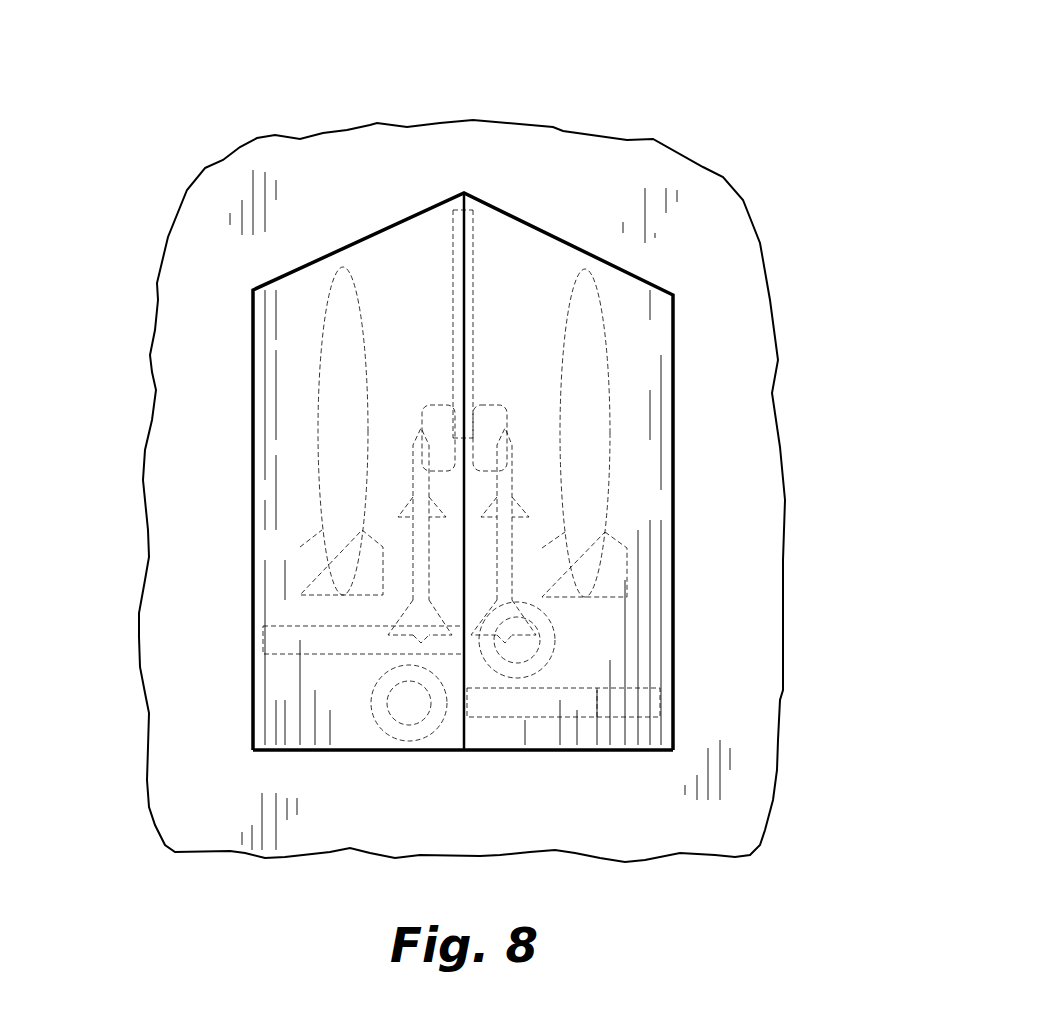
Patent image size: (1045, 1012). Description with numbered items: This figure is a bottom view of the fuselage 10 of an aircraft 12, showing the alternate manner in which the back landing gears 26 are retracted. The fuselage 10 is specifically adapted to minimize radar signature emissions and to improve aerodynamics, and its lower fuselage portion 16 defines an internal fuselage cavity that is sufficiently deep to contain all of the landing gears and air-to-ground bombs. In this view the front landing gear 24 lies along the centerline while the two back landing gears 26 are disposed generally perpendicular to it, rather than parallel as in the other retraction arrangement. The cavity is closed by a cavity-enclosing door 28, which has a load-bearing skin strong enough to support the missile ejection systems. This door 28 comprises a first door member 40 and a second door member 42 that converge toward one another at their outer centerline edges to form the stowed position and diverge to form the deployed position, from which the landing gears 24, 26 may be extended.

The fuselage 10 is at (772, 242).
The aircraft 12 is at (714, 42).
The lower fuselage portion 16 is at (187, 345).
The front landing gear 24 is at (470, 247).
The back landing gears 26 is at (290, 640).
The cavity-enclosing door 28 is at (354, 768).
The first door member 40 is at (310, 485).
The second door member 42 is at (657, 463).